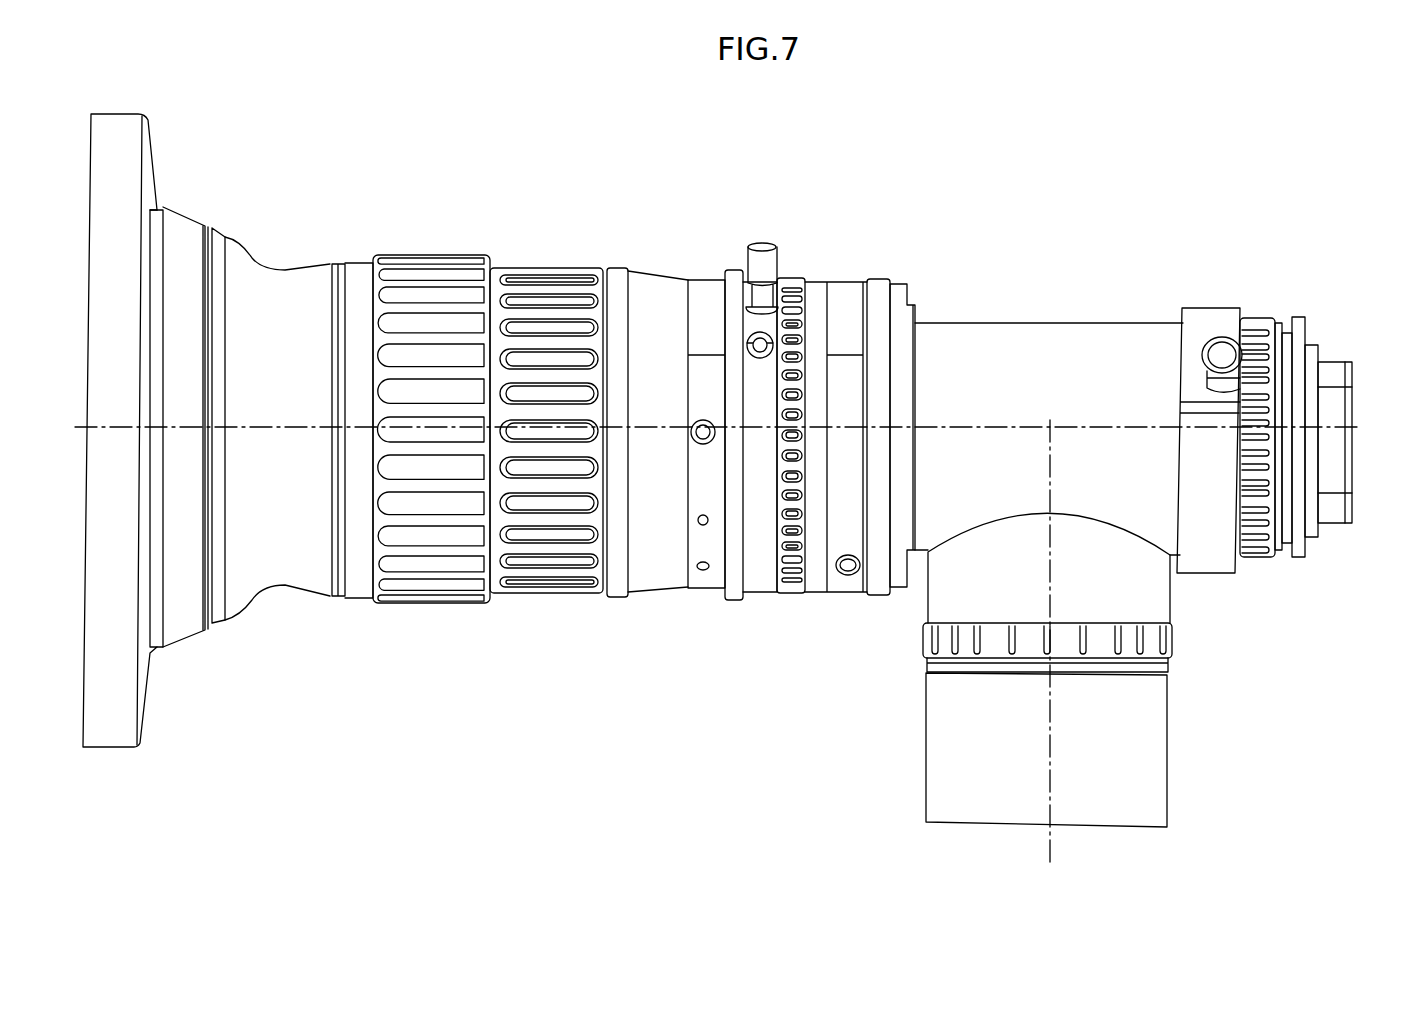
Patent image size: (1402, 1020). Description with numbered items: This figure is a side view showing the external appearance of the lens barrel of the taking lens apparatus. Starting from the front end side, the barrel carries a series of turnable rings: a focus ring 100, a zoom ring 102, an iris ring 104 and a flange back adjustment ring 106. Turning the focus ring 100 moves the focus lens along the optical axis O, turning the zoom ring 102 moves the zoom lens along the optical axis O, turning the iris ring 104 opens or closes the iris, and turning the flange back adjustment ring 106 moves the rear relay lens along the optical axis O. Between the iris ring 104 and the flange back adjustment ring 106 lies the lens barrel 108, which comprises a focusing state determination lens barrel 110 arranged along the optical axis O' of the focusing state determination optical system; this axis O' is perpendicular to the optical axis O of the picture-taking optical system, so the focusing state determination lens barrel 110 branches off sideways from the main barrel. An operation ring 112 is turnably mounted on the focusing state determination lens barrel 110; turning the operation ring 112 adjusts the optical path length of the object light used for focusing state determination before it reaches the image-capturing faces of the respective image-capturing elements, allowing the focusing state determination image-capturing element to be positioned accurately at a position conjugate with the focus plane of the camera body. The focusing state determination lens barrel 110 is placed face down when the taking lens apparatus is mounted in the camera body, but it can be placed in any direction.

The focus ring 100 is at (560, 585).
The zoom ring 102 is at (757, 567).
The iris ring 104 is at (875, 573).
The flange back adjustment ring 106 is at (1210, 545).
The lens barrel 108 is at (1077, 347).
The focusing state determination lens barrel 110 is at (1175, 787).
The operation ring 112 is at (943, 638).
The optical axis O is at (717, 404).
The optical axis of the focusing state determination optical system O' is at (1090, 641).